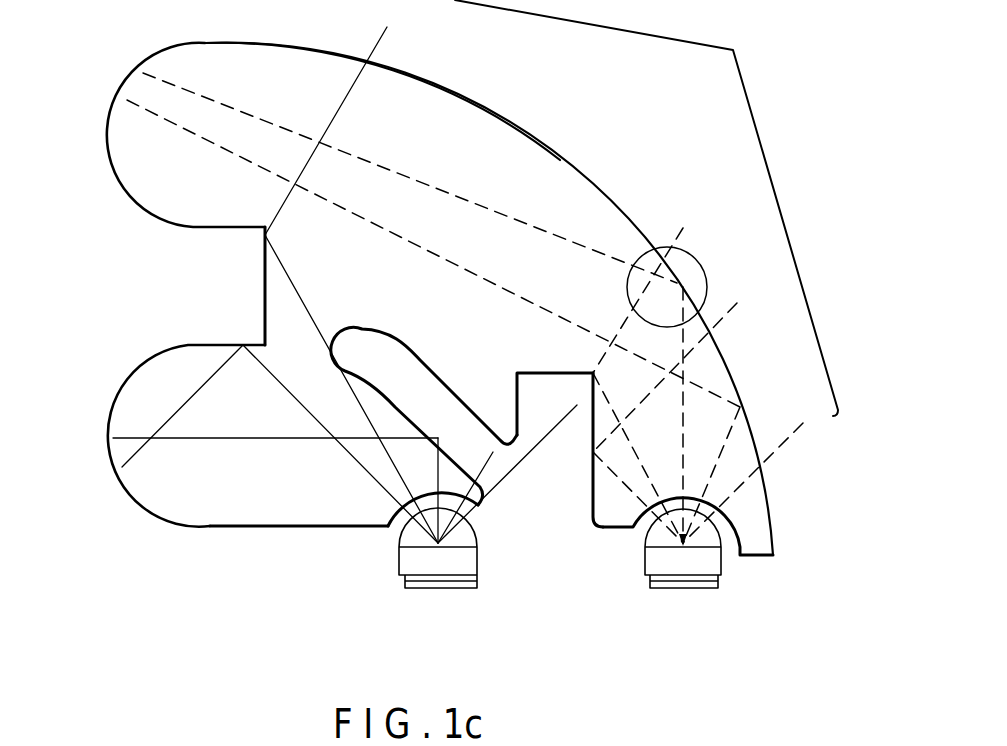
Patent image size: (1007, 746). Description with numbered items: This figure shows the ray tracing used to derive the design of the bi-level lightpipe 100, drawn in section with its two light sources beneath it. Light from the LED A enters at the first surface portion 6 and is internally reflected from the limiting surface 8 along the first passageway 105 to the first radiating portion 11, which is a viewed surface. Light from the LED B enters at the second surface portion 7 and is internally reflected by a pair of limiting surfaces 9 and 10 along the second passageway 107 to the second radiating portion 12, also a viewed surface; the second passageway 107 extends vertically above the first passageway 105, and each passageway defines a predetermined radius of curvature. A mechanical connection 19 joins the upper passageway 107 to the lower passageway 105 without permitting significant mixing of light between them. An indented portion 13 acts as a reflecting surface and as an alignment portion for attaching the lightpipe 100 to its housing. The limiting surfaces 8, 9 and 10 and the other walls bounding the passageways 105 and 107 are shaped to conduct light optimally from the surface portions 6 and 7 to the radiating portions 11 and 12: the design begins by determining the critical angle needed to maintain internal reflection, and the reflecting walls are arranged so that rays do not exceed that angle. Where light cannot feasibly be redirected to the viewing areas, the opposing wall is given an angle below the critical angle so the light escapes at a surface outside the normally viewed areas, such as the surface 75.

The bi-level lightpipe 100 is at (562, 125).
The escape surface 75 is at (646, 208).
The second passageway 107 is at (455, 100).
The limiting surface 10 is at (610, 198).
The second radiating portion 12 is at (130, 183).
The mechanical connection 19 is at (270, 290).
The first radiating portion 11 is at (130, 395).
The first passageway 105 is at (226, 510).
The first surface portion 6 is at (427, 497).
The limiting surface 8 is at (383, 390).
The indented portion 13 is at (540, 372).
The limiting surface 9 is at (595, 432).
The second surface portion 7 is at (703, 492).
The LED A is at (455, 565).
The LED B is at (713, 565).